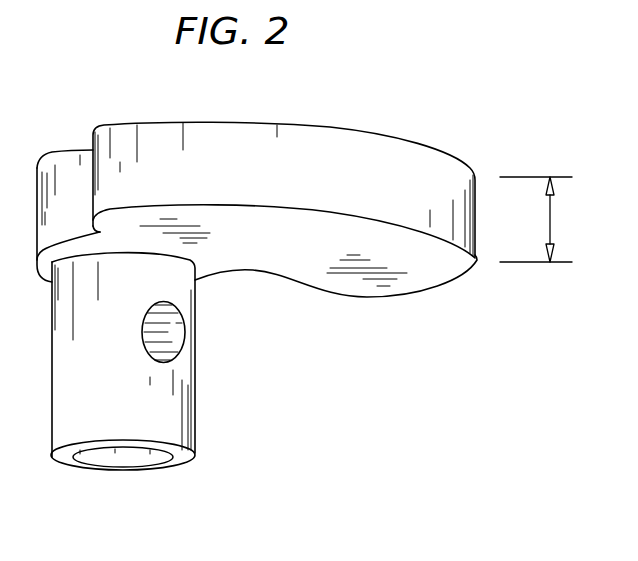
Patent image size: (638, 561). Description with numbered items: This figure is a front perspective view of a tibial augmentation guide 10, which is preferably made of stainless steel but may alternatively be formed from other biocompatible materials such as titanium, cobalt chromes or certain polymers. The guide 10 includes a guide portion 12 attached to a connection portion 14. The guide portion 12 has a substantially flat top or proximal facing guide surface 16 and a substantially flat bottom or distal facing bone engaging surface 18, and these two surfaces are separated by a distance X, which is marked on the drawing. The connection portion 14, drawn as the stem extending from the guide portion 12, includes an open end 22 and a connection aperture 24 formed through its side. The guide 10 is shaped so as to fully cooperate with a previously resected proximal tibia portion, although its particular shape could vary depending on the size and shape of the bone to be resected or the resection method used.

The tibial augmentation guide 10 is at (475, 104).
The guide portion 12 is at (218, 156).
The connection portion 14 is at (104, 377).
The guide surface 16 is at (313, 123).
The bone engaging surface 18 is at (305, 252).
The open end 22 is at (130, 460).
The connection aperture 24 is at (167, 332).
The distance X is at (551, 214).